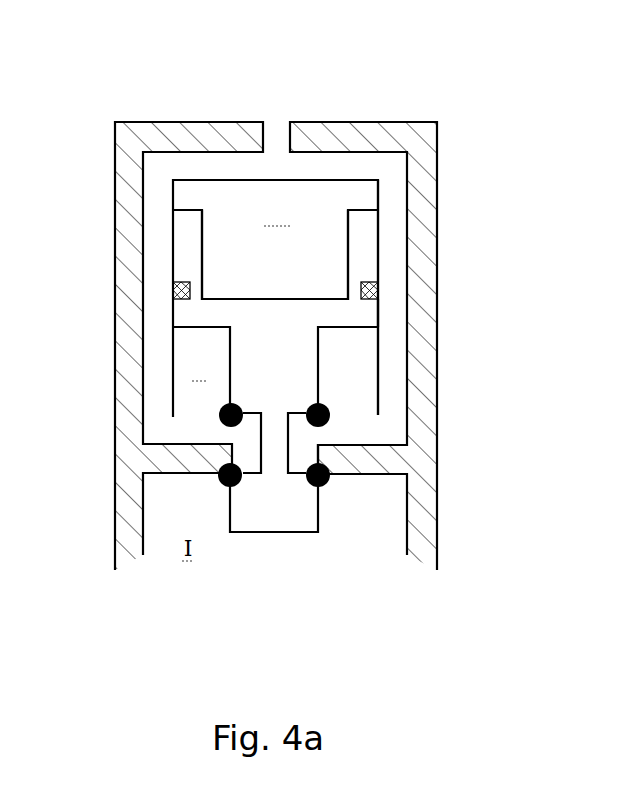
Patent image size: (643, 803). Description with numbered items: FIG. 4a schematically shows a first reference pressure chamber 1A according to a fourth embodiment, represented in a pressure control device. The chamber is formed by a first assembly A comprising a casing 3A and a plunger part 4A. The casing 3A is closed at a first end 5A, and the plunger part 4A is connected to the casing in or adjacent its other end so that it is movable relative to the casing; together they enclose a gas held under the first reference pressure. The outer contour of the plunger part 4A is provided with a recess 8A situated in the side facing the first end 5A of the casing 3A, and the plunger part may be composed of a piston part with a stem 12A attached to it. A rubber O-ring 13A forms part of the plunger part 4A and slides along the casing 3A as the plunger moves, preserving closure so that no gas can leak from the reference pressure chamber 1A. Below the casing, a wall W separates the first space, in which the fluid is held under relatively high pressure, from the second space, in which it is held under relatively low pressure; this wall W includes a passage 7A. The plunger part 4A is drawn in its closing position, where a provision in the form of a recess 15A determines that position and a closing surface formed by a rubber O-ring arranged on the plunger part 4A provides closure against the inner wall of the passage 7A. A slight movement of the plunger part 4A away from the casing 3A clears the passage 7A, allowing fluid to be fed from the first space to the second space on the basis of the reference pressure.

The first reference pressure chamber 1A is at (280, 335).
The casing 3A is at (367, 180).
The first end 5A is at (317, 180).
The recess 8A is at (228, 257).
The O-ring 13A is at (175, 288).
The first assembly A is at (362, 246).
The plunger part 4A is at (362, 315).
The stem 12A is at (297, 359).
The recess 15A is at (303, 446).
The passage 7A is at (246, 460).
The wall W is at (372, 462).